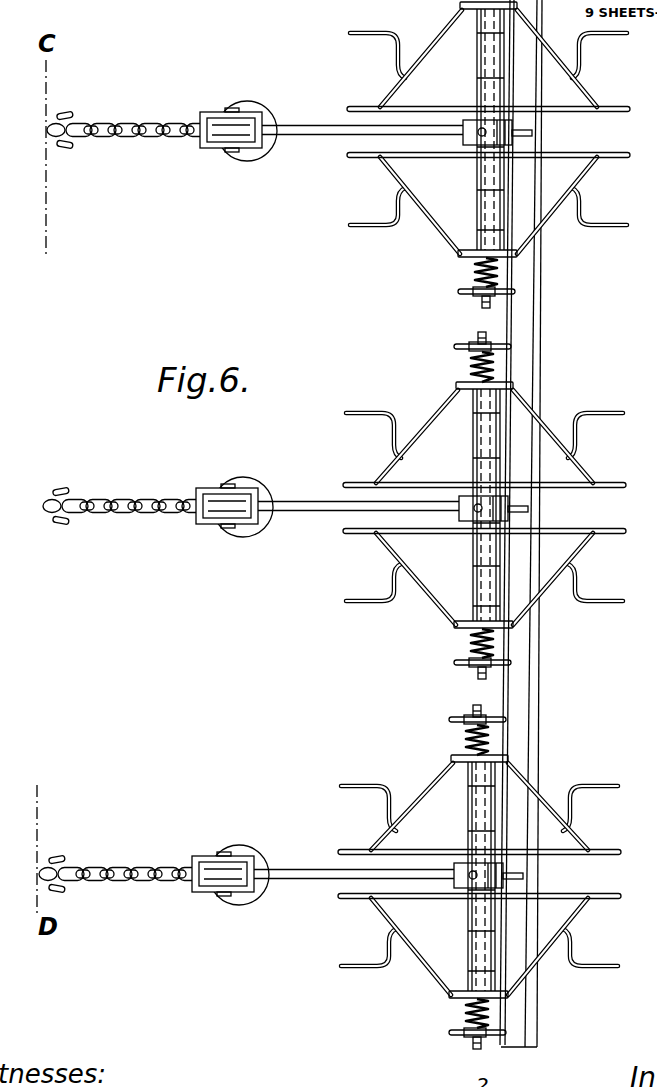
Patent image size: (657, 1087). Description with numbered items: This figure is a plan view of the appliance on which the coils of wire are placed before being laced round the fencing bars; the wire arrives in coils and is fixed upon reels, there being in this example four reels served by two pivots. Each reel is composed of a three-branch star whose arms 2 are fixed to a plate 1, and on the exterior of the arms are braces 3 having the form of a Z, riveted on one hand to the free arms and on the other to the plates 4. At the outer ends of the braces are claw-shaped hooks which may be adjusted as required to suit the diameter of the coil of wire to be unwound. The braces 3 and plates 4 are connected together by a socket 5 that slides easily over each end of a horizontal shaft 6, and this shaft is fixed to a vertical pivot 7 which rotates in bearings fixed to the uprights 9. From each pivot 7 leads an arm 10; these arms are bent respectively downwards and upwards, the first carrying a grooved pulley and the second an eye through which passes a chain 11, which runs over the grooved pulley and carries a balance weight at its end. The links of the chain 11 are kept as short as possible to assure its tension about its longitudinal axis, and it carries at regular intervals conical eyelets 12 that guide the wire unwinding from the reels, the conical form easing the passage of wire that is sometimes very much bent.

The plate 1 is at (511, 157).
The arms 2 is at (578, 152).
The braces 3 is at (396, 89).
The plates 4 is at (510, 256).
The socket 5 is at (478, 60).
The horizontal shaft 6 is at (480, 306).
The vertical pivot 7 is at (505, 107).
The uprights 9 is at (533, 133).
The arm 10 is at (305, 512).
The chain 11 is at (143, 137).
The conical eyelets 12 is at (58, 488).